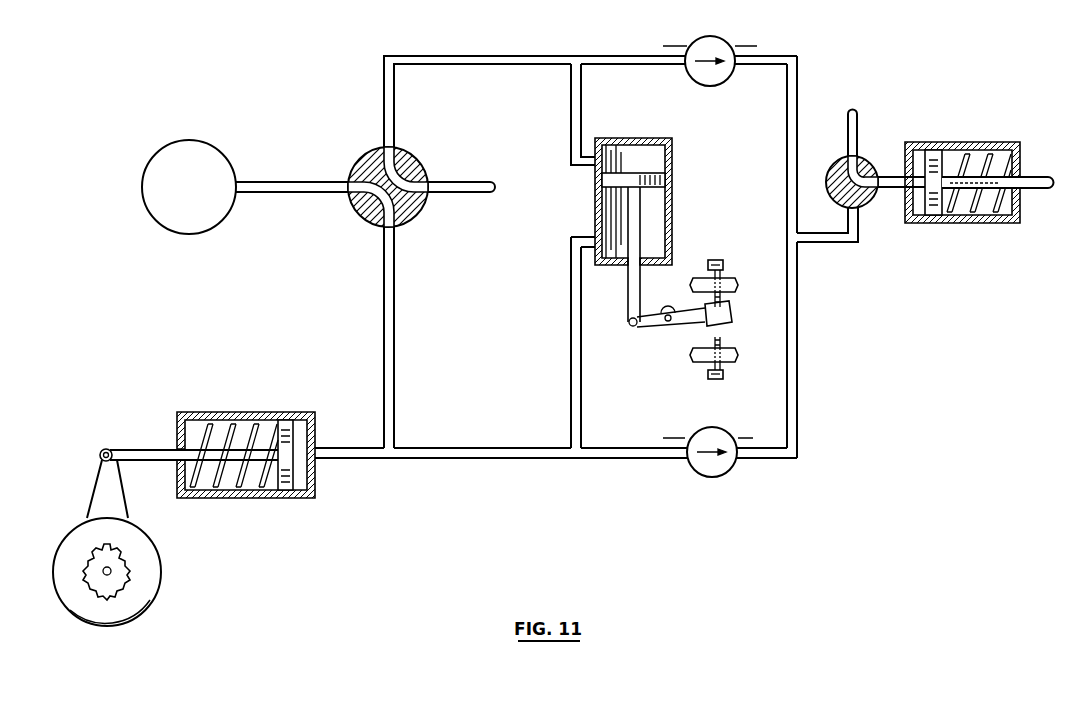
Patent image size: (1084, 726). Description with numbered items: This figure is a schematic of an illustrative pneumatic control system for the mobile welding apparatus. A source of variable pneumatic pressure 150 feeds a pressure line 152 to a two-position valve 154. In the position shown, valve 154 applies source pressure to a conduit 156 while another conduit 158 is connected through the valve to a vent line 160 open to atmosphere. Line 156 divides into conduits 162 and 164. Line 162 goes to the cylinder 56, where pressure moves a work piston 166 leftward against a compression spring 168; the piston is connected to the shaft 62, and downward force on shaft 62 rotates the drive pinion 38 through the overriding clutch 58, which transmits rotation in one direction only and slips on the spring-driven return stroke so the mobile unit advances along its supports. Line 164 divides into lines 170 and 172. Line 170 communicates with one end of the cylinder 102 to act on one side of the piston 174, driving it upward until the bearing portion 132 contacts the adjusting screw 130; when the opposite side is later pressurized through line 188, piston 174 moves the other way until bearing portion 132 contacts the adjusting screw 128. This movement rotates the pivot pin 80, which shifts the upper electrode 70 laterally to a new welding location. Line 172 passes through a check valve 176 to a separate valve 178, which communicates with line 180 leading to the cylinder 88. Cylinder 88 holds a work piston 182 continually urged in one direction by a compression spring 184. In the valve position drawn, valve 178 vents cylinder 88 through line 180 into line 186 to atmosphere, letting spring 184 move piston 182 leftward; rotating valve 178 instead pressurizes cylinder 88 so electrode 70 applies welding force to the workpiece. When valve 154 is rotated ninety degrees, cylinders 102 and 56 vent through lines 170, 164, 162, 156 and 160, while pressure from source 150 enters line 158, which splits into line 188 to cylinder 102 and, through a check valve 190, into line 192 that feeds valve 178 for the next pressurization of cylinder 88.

The source of variable pneumatic pressure 150 is at (208, 222).
The conduit or pressure line 152 is at (300, 186).
The two-position valve 154 is at (396, 156).
The conduit 156 is at (395, 282).
The conduit 158 is at (383, 95).
The vent line 160 is at (468, 187).
The conduit 162 is at (340, 452).
The conduit 164 is at (487, 452).
The work piston 166 is at (315, 422).
The compression spring 168 is at (253, 475).
The cylinder 56 is at (273, 412).
The shaft 62 is at (137, 453).
The overriding or backstop clutch 58 is at (87, 612).
The drive pinion 38 is at (120, 572).
The line 170 is at (572, 395).
The line 172 is at (778, 452).
The check valve 176 is at (720, 465).
The line 188 is at (571, 103).
The check valve 190 is at (712, 80).
The line 192 is at (785, 47).
The cylinder 102 is at (673, 153).
The piston 174 is at (640, 180).
The bearing portion 132 is at (701, 314).
The pivot pin 80 is at (668, 327).
The adjusting screw 128 is at (727, 263).
The adjusting screw 130 is at (723, 373).
The valve 178 is at (840, 188).
The line 180 is at (893, 188).
The line 186 is at (860, 119).
The cylinder 88 is at (988, 143).
The work piston 182 is at (932, 153).
The compression spring 184 is at (957, 210).
The upper electrode 70 is at (1037, 188).